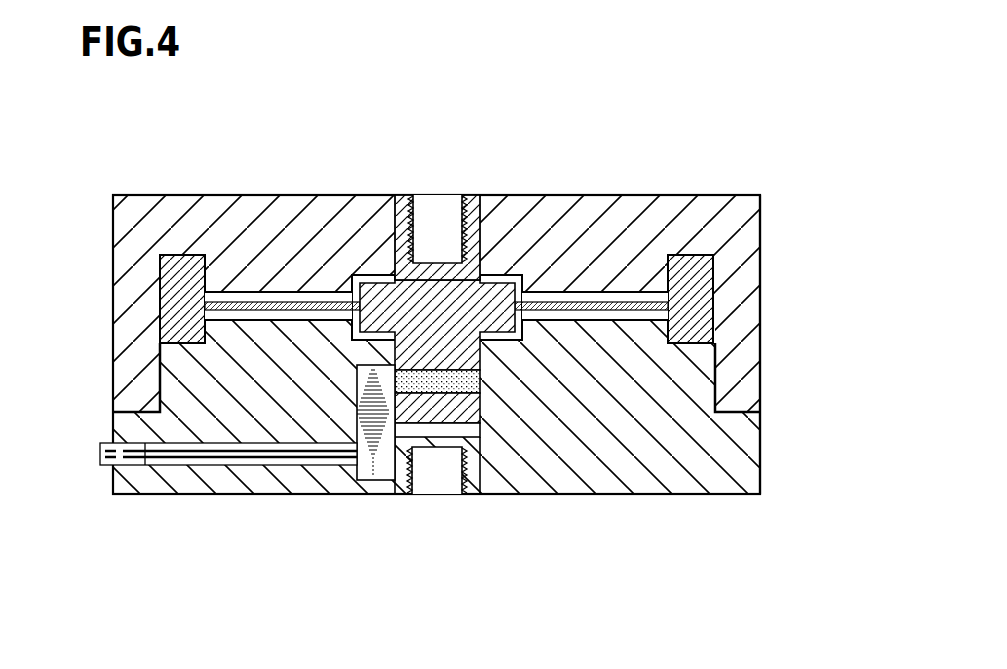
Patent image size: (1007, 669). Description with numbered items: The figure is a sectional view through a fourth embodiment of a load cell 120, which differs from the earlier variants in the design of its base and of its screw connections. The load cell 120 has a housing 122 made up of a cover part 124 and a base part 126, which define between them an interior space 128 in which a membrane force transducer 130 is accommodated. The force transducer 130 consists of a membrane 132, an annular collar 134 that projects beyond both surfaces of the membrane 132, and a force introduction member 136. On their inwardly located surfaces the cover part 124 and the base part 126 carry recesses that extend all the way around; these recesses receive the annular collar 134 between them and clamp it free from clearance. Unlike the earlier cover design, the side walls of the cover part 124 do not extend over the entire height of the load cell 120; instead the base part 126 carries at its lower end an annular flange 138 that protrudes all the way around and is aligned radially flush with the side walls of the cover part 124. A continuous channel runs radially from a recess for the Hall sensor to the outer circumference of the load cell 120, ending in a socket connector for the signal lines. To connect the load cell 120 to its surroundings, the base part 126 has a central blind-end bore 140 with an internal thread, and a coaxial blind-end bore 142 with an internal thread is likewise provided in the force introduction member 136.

The load cell 120 is at (765, 143).
The housing 122 is at (790, 348).
The cover part 124 is at (113, 308).
The base part 126 is at (648, 495).
The interior space 128 is at (285, 302).
The membrane force transducer 130 is at (538, 262).
The membrane 132 is at (258, 300).
The annular collar 134 is at (178, 287).
The force introduction member 136 is at (480, 180).
The annular flange 138 is at (760, 455).
The blind-end bore 140 is at (444, 495).
The blind-end bore 142 is at (432, 180).